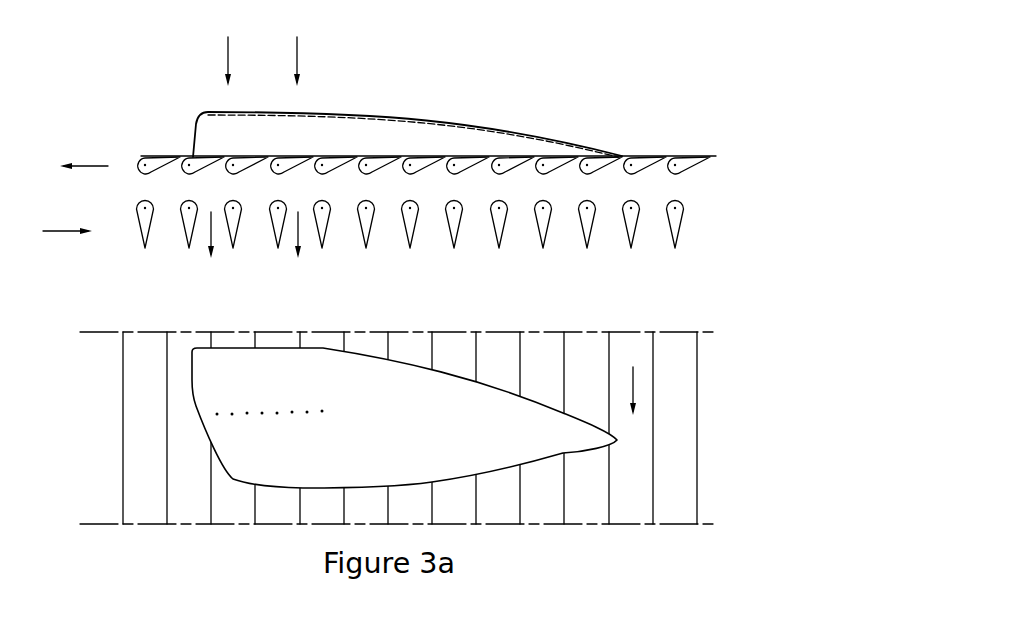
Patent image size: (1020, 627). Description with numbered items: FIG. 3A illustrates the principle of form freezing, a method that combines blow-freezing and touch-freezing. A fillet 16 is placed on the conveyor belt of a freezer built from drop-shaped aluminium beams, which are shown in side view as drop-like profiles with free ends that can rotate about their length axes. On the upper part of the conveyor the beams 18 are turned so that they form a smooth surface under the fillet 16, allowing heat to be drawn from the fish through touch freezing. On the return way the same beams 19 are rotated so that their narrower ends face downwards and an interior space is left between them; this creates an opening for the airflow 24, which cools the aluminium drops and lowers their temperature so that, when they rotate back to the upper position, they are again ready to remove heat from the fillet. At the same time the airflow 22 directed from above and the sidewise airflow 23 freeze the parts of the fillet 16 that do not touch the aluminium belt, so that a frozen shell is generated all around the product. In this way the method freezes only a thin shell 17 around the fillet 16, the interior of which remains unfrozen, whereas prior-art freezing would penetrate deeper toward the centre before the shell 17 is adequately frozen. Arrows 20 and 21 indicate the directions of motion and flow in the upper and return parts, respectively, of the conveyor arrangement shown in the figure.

The fillet 16 is at (367, 135).
The thin shell 17 is at (495, 125).
The drop-shape aluminium beams on upper part of conveyor 18 is at (697, 172).
The drop-shape aluminium beams on return way 19 is at (588, 228).
The direction of movement arrow 20 is at (79, 141).
The flow direction arrow 21 is at (67, 255).
The airflow from above 22 is at (262, 57).
The sidewise airflow 23 is at (662, 391).
The airflow opening 24 is at (254, 246).